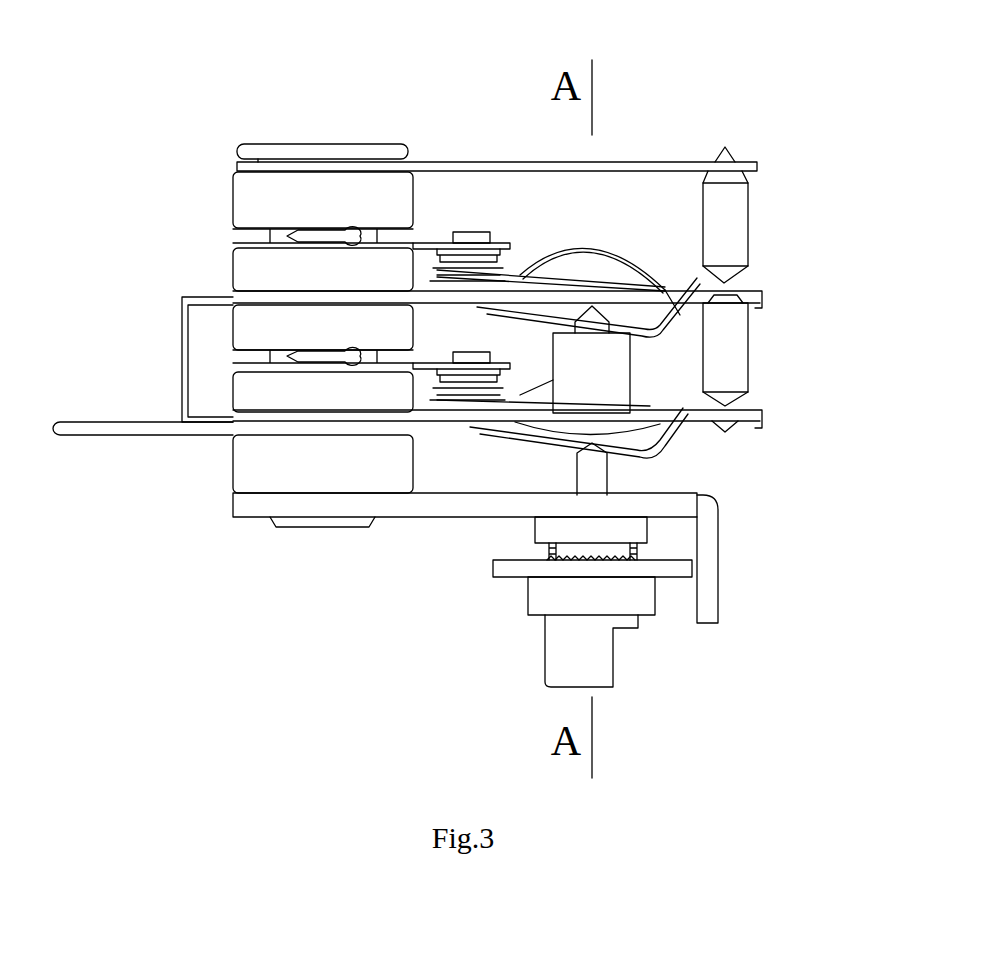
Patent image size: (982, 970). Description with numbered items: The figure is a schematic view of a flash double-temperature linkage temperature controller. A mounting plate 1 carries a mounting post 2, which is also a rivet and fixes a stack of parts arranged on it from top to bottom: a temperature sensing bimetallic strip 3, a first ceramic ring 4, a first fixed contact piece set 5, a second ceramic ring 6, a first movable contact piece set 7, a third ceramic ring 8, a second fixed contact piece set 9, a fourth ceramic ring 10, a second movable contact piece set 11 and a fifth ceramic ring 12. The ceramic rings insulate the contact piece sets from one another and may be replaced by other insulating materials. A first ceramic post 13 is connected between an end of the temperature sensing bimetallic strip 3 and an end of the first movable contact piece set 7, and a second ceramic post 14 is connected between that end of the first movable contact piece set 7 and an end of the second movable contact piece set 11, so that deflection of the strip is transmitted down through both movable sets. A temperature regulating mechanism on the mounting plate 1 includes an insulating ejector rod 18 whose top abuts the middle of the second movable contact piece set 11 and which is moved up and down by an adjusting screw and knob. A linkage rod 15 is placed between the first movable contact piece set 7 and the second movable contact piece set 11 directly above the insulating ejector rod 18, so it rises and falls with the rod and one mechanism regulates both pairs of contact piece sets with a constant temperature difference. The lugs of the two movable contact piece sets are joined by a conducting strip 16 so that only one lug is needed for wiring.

The mounting plate 1 is at (443, 500).
The mounting post 2 is at (303, 142).
The temperature sensing bimetallic strip 3 is at (497, 160).
The first ceramic ring 4 is at (267, 203).
The first fixed contact piece set 5 is at (510, 245).
The second ceramic ring 6 is at (253, 268).
The first movable contact piece set 7 is at (672, 291).
The third ceramic ring 8 is at (268, 330).
The second fixed contact piece set 9 is at (513, 362).
The fourth ceramic ring 10 is at (278, 392).
The second movable contact piece set 11 is at (680, 432).
The fifth ceramic ring 12 is at (270, 463).
The first ceramic post 13 is at (725, 225).
The second ceramic post 14 is at (750, 348).
The linkage rod 15 is at (587, 367).
The conducting strip 16 is at (180, 357).
The insulating ejector rod 18 is at (588, 472).